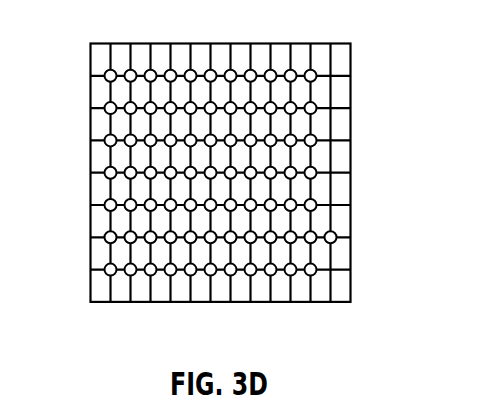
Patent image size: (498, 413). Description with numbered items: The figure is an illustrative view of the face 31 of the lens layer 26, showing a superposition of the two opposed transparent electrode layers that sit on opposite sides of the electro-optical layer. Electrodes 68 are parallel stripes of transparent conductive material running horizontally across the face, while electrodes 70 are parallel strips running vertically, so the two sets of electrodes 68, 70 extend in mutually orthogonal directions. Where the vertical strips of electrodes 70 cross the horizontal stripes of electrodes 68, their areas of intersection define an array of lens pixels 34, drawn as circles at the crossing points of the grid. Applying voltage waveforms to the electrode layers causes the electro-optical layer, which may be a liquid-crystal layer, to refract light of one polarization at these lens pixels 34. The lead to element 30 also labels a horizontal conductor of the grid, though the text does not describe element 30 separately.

The lens layer 26 is at (227, 151).
The row electrode line 30 is at (148, 105).
The face 31 is at (342, 122).
The lens pixels 34 is at (291, 233).
The electrodes 68 is at (299, 75).
The electrodes 70 is at (128, 186).